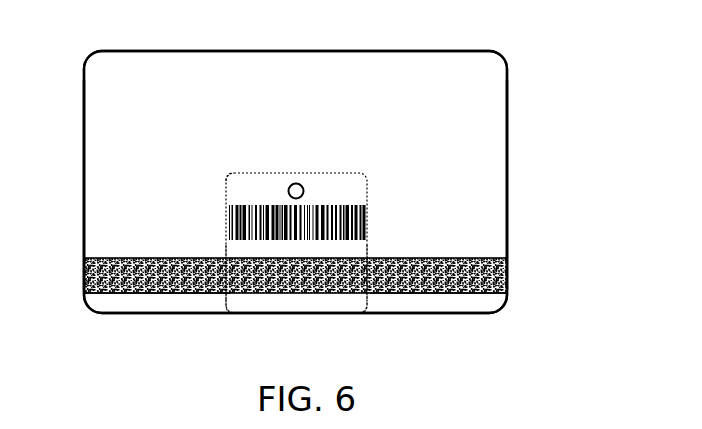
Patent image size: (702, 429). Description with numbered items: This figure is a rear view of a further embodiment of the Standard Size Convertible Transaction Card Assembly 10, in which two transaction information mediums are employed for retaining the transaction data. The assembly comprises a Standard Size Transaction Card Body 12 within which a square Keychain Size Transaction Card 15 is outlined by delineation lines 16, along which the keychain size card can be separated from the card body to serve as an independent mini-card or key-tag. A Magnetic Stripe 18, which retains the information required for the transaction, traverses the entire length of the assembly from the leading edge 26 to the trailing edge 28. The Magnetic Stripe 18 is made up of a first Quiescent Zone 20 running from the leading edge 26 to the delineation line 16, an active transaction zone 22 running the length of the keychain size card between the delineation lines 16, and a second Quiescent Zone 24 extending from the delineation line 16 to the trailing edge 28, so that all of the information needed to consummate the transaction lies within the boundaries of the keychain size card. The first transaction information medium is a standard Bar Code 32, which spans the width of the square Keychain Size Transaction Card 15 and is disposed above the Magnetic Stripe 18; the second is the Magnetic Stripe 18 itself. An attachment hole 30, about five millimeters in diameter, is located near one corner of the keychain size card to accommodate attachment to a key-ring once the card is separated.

The Standard Size Convertible Transaction Card Assembly 10 is at (577, 108).
The Standard Size Transaction Card Body 12 is at (490, 153).
The square Keychain Size Transaction Card 15 is at (355, 190).
The delineation line 16 is at (267, 171).
The Magnetic Stripe 18 is at (506, 268).
The first Quiescent Zone 20 is at (102, 293).
The active (transaction) zone 22 is at (268, 293).
The second Quiescent Zone 24 is at (455, 281).
The leading edge 26 is at (83, 219).
The trailing edge 28 is at (509, 177).
The attachment hole 30 is at (297, 183).
The Bar Code 32 is at (360, 219).